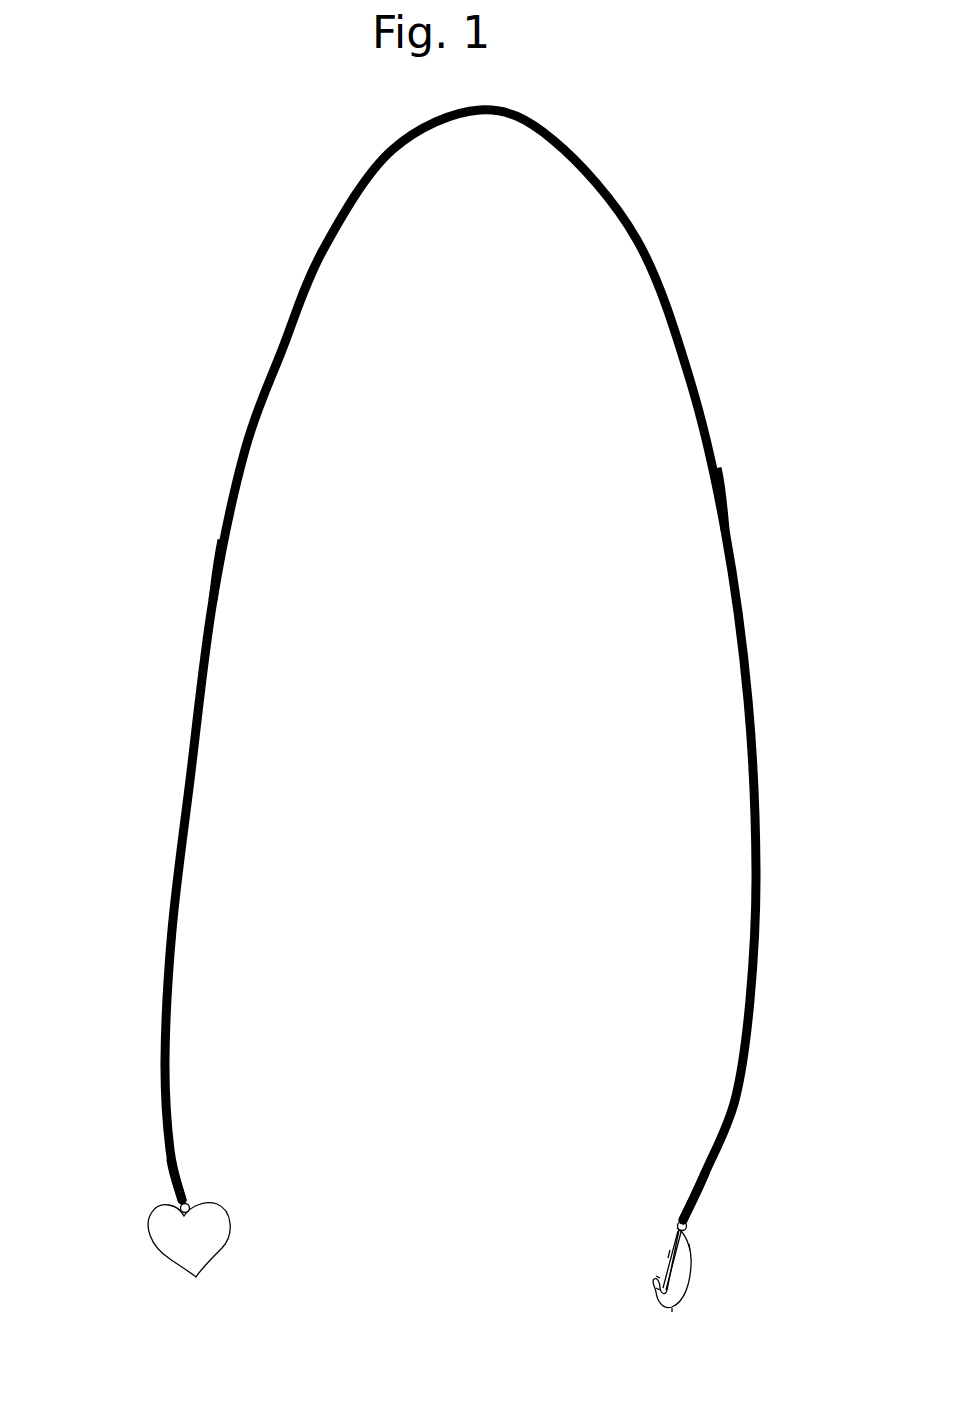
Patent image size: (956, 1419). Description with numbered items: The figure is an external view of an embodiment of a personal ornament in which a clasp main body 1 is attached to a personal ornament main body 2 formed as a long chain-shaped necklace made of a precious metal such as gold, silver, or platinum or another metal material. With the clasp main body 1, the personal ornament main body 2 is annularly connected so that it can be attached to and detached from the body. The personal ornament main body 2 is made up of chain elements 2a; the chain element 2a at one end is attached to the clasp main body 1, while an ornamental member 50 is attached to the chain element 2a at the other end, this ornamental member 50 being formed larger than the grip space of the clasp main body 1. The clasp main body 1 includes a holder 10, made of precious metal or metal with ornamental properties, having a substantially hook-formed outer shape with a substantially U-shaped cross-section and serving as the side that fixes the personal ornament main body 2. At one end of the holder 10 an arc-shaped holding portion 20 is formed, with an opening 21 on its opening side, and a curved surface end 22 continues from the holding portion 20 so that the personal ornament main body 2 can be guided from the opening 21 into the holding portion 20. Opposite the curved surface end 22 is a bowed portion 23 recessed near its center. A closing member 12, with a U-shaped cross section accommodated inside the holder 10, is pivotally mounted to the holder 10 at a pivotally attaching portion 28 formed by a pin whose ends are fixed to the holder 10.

The clasp main body 1 is at (672, 1312).
The personal ornament main body 2 is at (258, 405).
The chain element 2a is at (218, 540).
The holder 10 is at (685, 1284).
The closing member 12 is at (660, 1272).
The holding portion 20 is at (657, 1290).
The opening 21 is at (656, 1276).
The curved surface end 22 is at (663, 1258).
The bowed portion 23 is at (688, 1247).
The pivotally attaching portion 28 is at (673, 1229).
The ornamental member 50 is at (178, 1270).